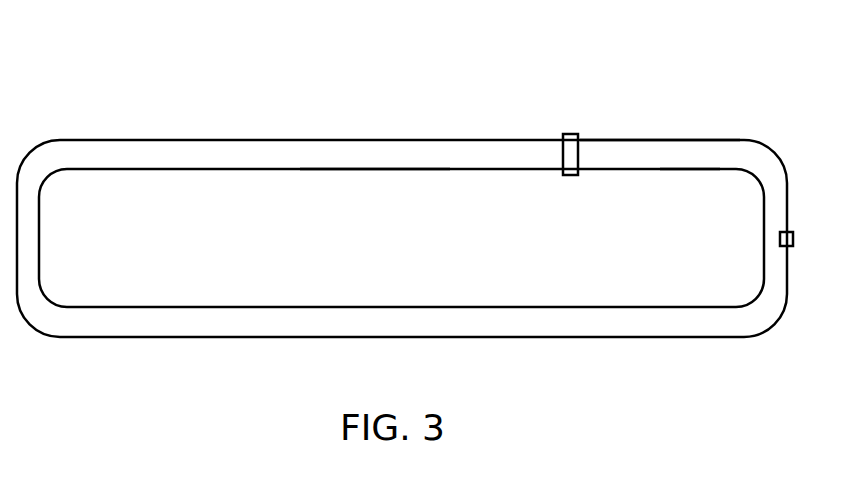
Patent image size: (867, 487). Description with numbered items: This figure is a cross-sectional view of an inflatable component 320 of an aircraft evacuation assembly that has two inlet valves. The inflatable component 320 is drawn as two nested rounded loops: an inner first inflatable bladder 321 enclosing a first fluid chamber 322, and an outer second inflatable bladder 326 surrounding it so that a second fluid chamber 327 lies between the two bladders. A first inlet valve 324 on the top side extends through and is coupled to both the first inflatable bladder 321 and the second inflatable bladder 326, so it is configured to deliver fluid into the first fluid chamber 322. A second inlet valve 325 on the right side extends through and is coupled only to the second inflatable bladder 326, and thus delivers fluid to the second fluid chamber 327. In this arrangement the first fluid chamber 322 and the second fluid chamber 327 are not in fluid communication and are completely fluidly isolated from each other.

The inflatable component 320 is at (146, 75).
The first inflatable bladder 321 is at (376, 168).
The first fluid chamber 322 is at (410, 188).
The first inlet valve 324 is at (565, 130).
The second inlet valve 325 is at (812, 252).
The second inflatable bladder 326 is at (613, 140).
The second fluid chamber 327 is at (683, 152).